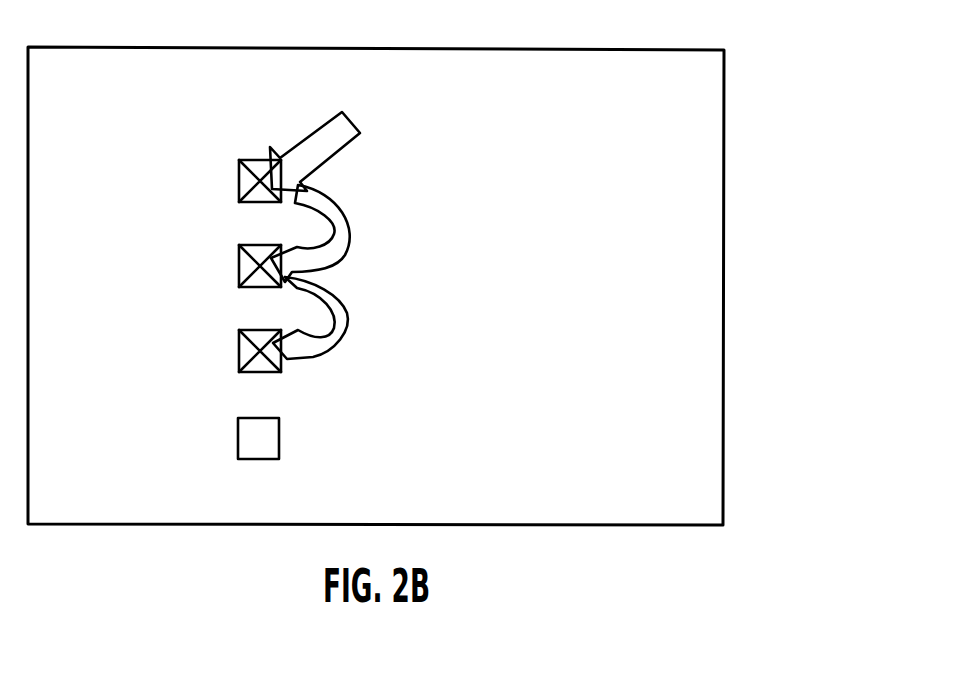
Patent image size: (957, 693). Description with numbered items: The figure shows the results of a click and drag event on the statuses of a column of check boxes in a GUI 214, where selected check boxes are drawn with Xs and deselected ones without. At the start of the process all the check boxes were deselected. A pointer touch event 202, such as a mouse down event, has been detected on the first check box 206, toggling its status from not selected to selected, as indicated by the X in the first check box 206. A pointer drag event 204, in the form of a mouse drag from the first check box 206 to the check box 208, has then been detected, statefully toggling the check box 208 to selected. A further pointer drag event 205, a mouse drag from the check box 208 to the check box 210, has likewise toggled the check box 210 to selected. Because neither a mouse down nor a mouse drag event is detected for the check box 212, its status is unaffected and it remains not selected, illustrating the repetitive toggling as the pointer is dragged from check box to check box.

The pointer touch event 202 is at (360, 133).
The pointer drag event 204 is at (347, 230).
The further pointer drag event 205 is at (346, 308).
The first check box 206 is at (239, 177).
The check box 208 is at (239, 263).
The check box 210 is at (239, 340).
The check box 212 is at (238, 425).
The GUI 214 is at (722, 493).